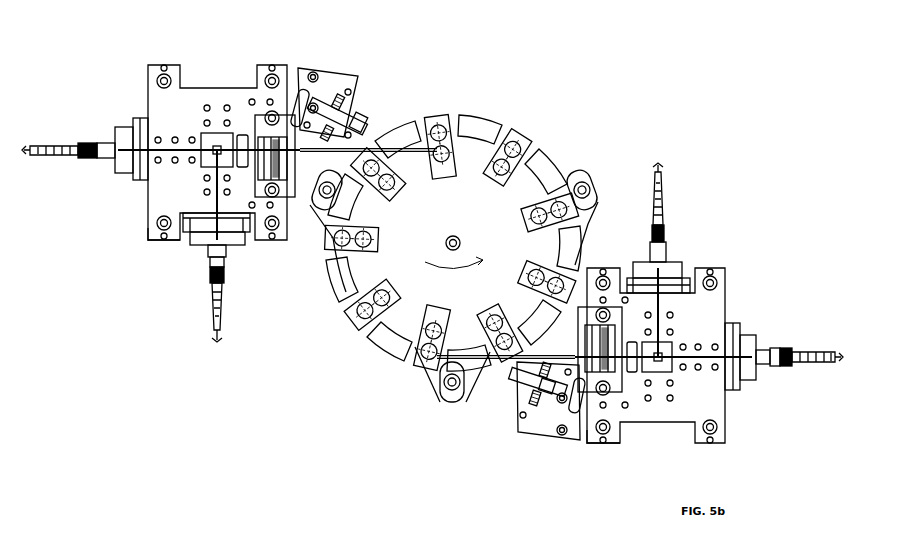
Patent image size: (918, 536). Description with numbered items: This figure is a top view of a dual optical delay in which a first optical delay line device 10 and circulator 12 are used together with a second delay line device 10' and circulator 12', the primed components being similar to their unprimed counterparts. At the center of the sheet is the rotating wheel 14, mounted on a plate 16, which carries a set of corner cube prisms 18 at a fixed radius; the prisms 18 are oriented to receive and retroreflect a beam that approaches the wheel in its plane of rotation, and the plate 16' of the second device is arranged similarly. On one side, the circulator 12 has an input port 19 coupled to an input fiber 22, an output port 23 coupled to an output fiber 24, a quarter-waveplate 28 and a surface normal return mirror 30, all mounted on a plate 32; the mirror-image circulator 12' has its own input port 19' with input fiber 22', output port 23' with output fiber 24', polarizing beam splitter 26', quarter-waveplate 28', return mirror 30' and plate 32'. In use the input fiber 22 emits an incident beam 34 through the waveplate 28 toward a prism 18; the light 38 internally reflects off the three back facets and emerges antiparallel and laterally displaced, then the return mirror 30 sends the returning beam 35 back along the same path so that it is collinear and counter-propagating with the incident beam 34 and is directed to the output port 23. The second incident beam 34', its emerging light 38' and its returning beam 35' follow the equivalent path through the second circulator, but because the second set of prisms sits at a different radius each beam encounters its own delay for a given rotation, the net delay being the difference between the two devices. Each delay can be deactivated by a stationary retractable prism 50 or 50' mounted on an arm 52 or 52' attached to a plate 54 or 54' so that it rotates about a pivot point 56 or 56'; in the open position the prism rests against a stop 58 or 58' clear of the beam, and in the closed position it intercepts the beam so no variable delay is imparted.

The optical delay line device 10 is at (454, 248).
The delay line device 10' is at (568, 173).
The optical circulator 12 is at (656, 367).
The circulator 12' is at (217, 129).
The rotating wheel 14 is at (478, 124).
The plate 16 is at (452, 265).
The plate 16' is at (526, 154).
The corner cube prisms 18 is at (363, 314).
The input port 19 is at (742, 346).
The input port 19' is at (123, 136).
The input fiber 22 is at (802, 345).
The input fiber 22' is at (68, 169).
The output port 23 is at (666, 266).
The output port 23' is at (208, 244).
The output fiber 24 is at (671, 260).
The output fiber 24' is at (231, 295).
The polarizing beam splitter 26' is at (217, 99).
The quarter-waveplate 28 is at (661, 404).
The quarter-waveplate 28' is at (243, 99).
The surface normal return mirror 30 is at (596, 341).
The surface normal return mirror 30' is at (279, 195).
The plate 32 is at (601, 450).
The plate 32' is at (150, 244).
The incident beam 34 is at (601, 385).
The incident beam 34' is at (205, 184).
The returning delayed beam 35 is at (599, 316).
The returning delayed beam 35' is at (237, 220).
The emerging beam 38 is at (512, 341).
The emerging beam 38' is at (379, 100).
The stationary retractable prism 50 is at (530, 389).
The prism 50' is at (371, 95).
The arm 52 is at (537, 422).
The arm 52' is at (337, 90).
The plate 54 is at (543, 407).
The plate 54' is at (328, 89).
The pivot point 56 is at (563, 422).
The pivot point 56' is at (304, 80).
The stop 58 is at (524, 396).
The stop 58' is at (354, 83).